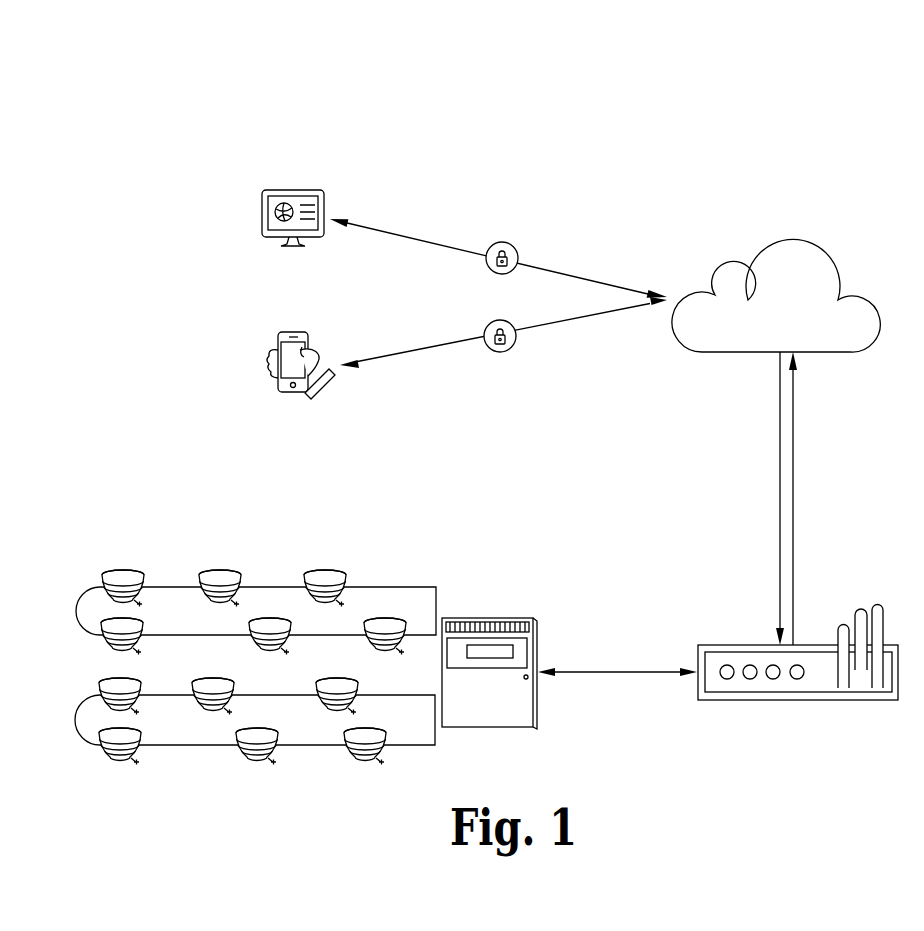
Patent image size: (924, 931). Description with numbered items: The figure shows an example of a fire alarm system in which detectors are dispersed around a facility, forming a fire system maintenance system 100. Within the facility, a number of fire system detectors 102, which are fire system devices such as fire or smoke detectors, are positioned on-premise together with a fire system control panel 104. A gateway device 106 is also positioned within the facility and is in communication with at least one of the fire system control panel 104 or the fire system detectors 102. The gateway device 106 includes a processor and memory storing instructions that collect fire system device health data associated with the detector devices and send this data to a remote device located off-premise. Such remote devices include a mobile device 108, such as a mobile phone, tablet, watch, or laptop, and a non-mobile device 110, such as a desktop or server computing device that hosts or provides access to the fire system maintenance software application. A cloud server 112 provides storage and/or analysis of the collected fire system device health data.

The fire system maintenance system 100 is at (289, 83).
The fire system detectors 102 is at (336, 572).
The fire system control panel 104 is at (505, 618).
The gateway device 106 is at (874, 701).
The mobile device 108 is at (278, 346).
The non-mobile device 110 is at (262, 207).
The cloud server 112 is at (838, 269).